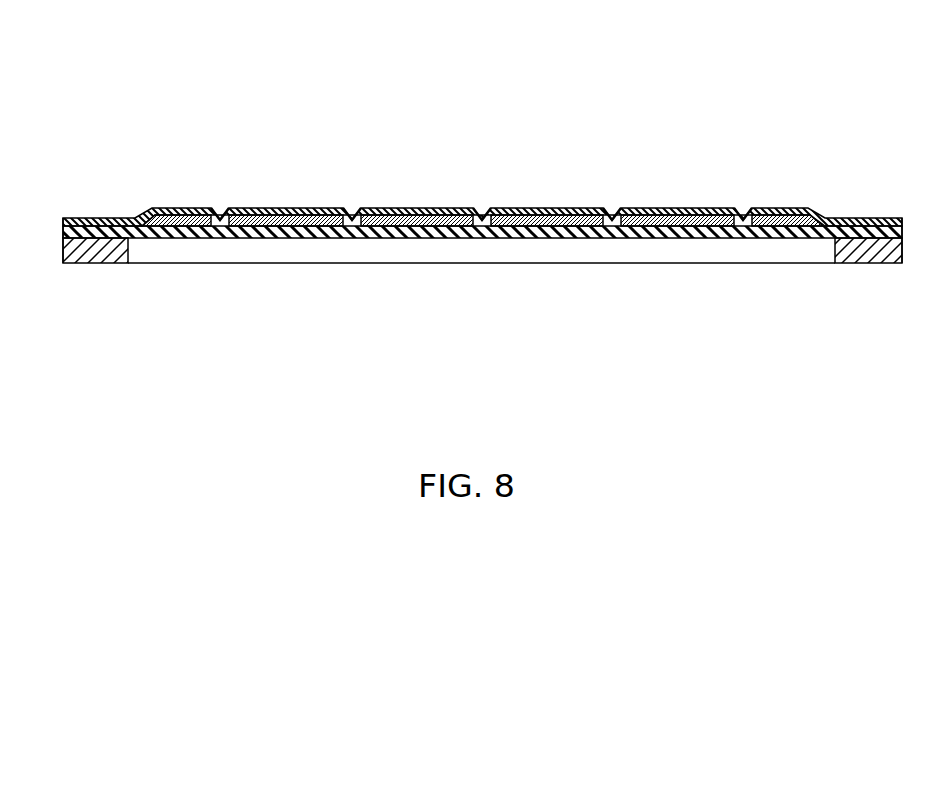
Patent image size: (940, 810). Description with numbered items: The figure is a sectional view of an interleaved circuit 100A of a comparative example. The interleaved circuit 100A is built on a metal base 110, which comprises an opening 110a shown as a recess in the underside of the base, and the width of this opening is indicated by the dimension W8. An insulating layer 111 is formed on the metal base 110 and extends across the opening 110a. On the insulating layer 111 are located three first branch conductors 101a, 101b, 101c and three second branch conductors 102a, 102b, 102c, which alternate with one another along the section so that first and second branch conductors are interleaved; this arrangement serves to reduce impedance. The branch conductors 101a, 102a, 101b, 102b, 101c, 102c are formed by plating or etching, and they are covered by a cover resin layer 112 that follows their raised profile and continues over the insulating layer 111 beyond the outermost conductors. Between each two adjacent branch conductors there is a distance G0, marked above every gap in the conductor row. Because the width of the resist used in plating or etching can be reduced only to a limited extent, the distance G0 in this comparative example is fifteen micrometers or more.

The interleaved circuit 100A is at (688, 60).
The metal base 110 is at (482, 270).
The opening 110a is at (568, 256).
The insulating layer 111 is at (440, 234).
The cover resin layer 112 is at (802, 209).
The first branch conductor 101a is at (175, 208).
The second branch conductor 102a is at (287, 208).
The first branch conductor 101b is at (408, 208).
The second branch conductor 102b is at (552, 208).
The first branch conductor 101c is at (672, 208).
The second branch conductor 102c is at (772, 208).
The distance between adjacent branch conductors G0 is at (229, 208).
The width of recess W8 is at (835, 268).